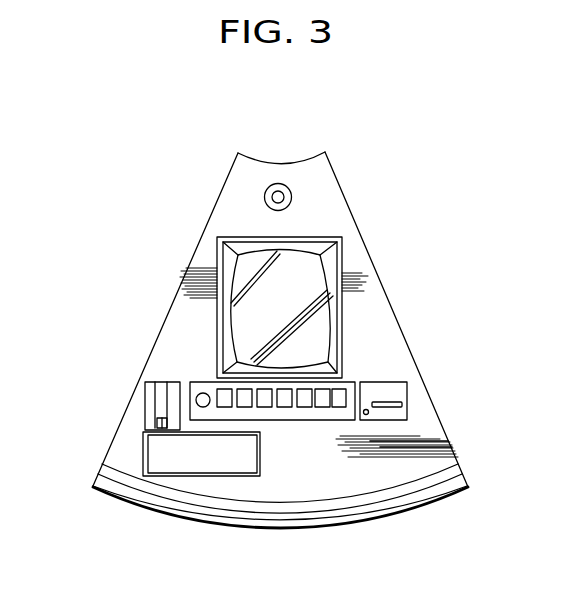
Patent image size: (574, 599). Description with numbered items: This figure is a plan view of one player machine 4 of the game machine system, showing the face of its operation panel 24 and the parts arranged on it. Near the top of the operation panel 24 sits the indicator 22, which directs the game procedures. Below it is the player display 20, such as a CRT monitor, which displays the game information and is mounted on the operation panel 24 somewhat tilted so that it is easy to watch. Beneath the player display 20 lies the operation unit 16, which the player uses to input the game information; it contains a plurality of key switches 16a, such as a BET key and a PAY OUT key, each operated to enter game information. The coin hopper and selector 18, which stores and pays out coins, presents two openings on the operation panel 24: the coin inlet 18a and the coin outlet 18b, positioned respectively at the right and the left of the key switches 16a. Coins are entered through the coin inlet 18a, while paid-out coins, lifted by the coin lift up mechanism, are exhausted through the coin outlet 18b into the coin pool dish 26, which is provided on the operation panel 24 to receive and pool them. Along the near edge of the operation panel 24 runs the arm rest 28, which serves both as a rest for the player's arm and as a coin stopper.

The player machine 4 is at (162, 150).
The operation unit 16 is at (235, 423).
The key switches 16a is at (302, 407).
The coin hopper and selector 18 is at (440, 369).
The coin inlet 18a is at (402, 405).
The coin outlet 18b is at (158, 398).
The player display 20 is at (343, 293).
The indicator 22 is at (292, 198).
The operation panel 24 is at (450, 443).
The coin pool dish 26 is at (205, 463).
The arm rest 28 is at (405, 501).